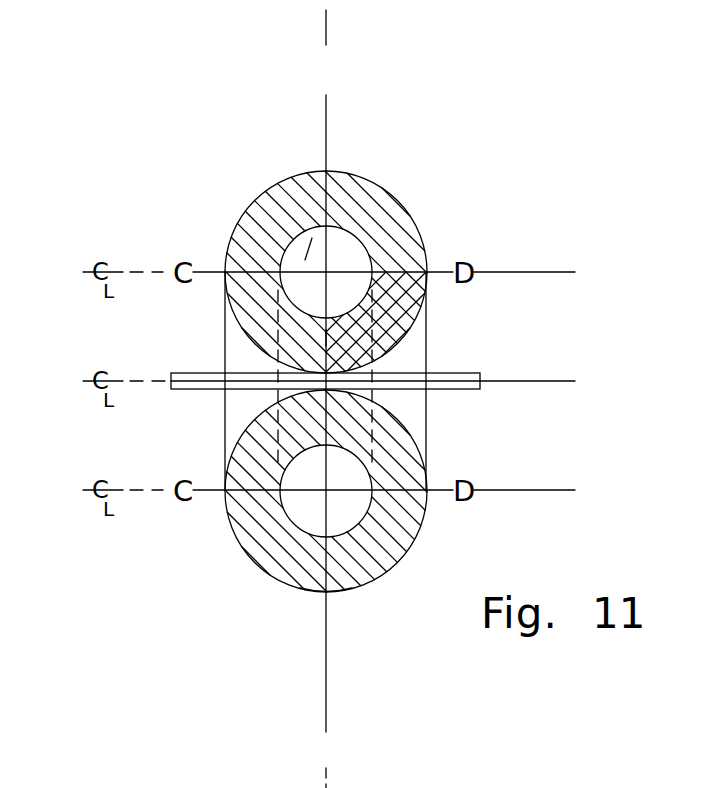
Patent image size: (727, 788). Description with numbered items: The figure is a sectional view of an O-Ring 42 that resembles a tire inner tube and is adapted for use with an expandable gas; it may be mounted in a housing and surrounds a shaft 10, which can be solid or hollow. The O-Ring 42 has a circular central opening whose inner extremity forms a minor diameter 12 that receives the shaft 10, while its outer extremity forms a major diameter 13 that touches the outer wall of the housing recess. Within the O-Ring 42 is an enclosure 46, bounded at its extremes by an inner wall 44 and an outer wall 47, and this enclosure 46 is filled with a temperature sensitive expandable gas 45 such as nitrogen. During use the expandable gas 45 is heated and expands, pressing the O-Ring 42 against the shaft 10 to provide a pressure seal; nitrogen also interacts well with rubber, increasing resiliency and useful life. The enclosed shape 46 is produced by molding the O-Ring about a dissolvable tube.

The shaft 10 is at (457, 389).
The minor diameter 12 is at (326, 10).
The major diameter 13 is at (323, 594).
The O-Ring 42 is at (247, 560).
The inner wall 44 is at (326, 338).
The expandable gas 45 is at (310, 250).
The enclosure 46 is at (348, 252).
The outer wall 47 is at (325, 207).